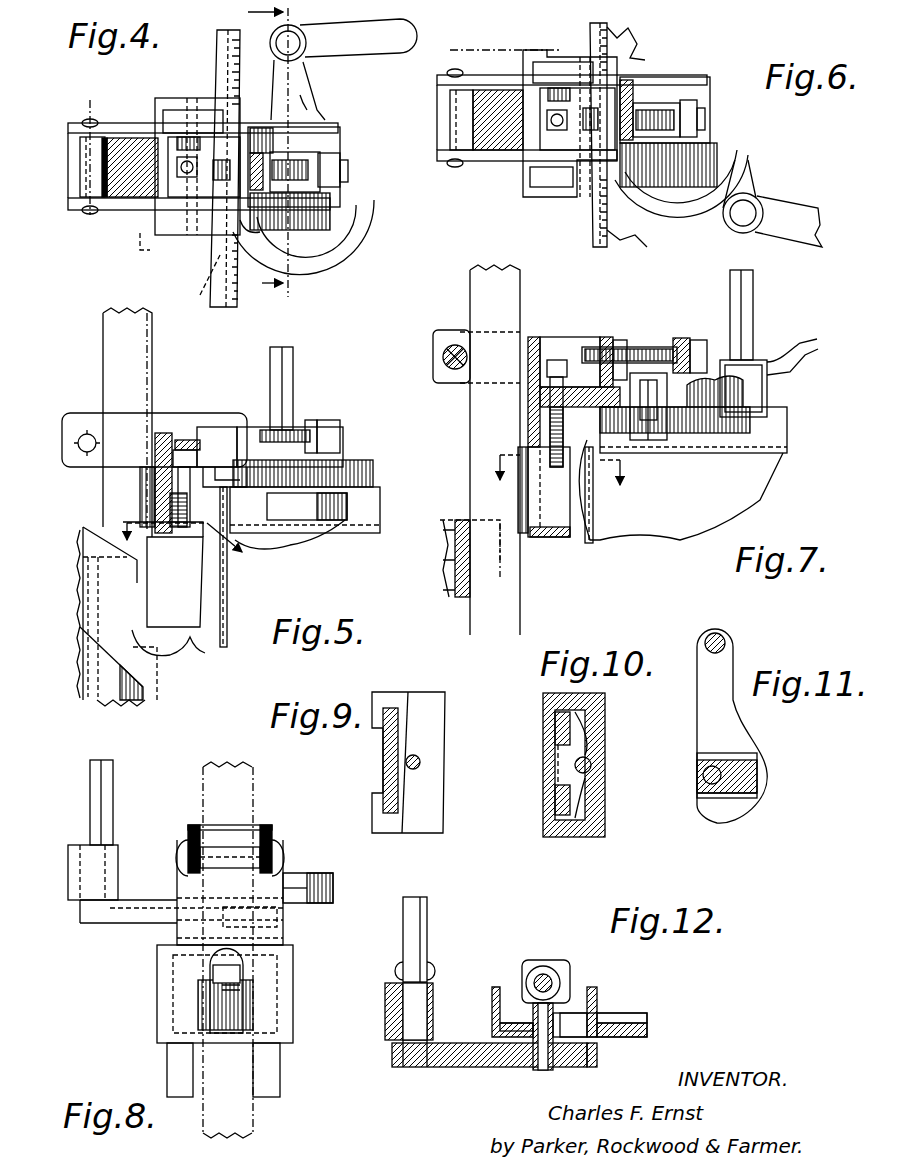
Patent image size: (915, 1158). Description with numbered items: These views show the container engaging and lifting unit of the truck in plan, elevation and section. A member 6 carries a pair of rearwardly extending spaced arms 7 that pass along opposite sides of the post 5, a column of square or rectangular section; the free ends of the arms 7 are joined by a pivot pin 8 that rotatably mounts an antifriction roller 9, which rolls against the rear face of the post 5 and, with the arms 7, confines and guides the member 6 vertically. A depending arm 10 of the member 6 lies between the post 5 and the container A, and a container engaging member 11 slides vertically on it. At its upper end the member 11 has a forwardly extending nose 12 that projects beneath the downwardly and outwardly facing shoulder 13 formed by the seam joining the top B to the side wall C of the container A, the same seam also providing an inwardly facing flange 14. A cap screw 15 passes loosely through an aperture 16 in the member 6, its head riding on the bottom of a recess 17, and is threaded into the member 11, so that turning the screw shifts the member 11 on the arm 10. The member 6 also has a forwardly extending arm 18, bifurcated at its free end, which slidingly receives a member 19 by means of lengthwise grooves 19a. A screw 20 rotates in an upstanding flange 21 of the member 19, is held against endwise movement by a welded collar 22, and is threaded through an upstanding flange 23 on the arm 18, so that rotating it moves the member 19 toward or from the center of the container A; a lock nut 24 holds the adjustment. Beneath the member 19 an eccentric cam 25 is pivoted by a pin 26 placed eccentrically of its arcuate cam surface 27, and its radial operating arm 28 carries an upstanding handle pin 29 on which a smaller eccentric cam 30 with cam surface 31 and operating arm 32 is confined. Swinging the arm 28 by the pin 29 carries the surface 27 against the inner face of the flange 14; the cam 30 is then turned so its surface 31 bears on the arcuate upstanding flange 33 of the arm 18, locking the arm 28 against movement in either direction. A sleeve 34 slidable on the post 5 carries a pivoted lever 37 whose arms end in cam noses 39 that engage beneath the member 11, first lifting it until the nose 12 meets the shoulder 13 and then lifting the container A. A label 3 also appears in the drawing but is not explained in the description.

In FIG. 6, the workpiece edge 3 is at (630, 130).
In FIG. 4, the post 5 is at (107, 172).
In FIG. 6, the post 5 is at (473, 105).
In FIG. 5, the post 5 is at (127, 422).
In FIG. 7, the post 5 is at (490, 450).
In FIG. 8, the post 5 is at (203, 789).
In FIG. 4, the member 6 is at (250, 118).
In FIG. 6, the member 6 is at (530, 180).
In FIG. 5, the member 6 is at (160, 412).
In FIG. 7, the member 6 is at (535, 336).
In FIG. 8, the member 6 is at (283, 862).
In FIG. 12, the member 6 is at (495, 1002).
In FIG. 4, the rearwardly extending spaced arms 7 is at (120, 128).
In FIG. 6, the rearwardly extending spaced arms 7 is at (478, 75).
In FIG. 5, the rearwardly extending spaced arms 7 is at (154, 440).
In FIG. 7, the rearwardly extending spaced arms 7 is at (448, 333).
In FIG. 8, the rearwardly extending spaced arms 7 is at (188, 830).
In FIG. 4, the pivot pin 8 is at (90, 123).
In FIG. 6, the pivot pin 8 is at (462, 160).
In FIG. 5, the pivot pin 8 is at (85, 434).
In FIG. 7, the pivot pin 8 is at (443, 360).
In FIG. 8, the pivot pin 8 is at (178, 855).
In FIG. 4, the antifriction roller 9 is at (85, 165).
In FIG. 6, the antifriction roller 9 is at (455, 128).
In FIG. 5, the antifriction roller 9 is at (189, 545).
In FIG. 7, the antifriction roller 9 is at (445, 354).
In FIG. 8, the antifriction roller 9 is at (240, 845).
In FIG. 5, the depending arm 10 is at (158, 513).
In FIG. 7, the depending arm 10 is at (535, 416).
In FIG. 8, the depending arm 10 is at (277, 937).
In FIG. 9, the depending arm 10 is at (385, 774).
In FIG. 10, the depending arm 10 is at (557, 752).
In FIG. 4, the container engaging member 11 is at (195, 240).
In FIG. 6, the container engaging member 11 is at (545, 197).
In FIG. 5, the container engaging member 11 is at (245, 503).
In FIG. 7, the container engaging member 11 is at (560, 522).
In FIG. 8, the container engaging member 11 is at (291, 980).
In FIG. 9, the container engaging member 11 is at (402, 692).
In FIG. 10, the container engaging member 11 is at (607, 722).
In FIG. 4, the nose 12 is at (237, 155).
In FIG. 6, the nose 12 is at (585, 200).
In FIG. 5, the nose 12 is at (227, 600).
In FIG. 7, the nose 12 is at (590, 480).
In FIG. 9, the nose 12 is at (445, 758).
In FIG. 5, the shoulder 13 is at (210, 528).
In FIG. 7, the shoulder 13 is at (577, 386).
In FIG. 4, the flange 14 is at (222, 58).
In FIG. 6, the flange 14 is at (608, 235).
In FIG. 5, the flange 14 is at (370, 500).
In FIG. 7, the flange 14 is at (787, 413).
In FIG. 4, the cap screw 15 is at (190, 178).
In FIG. 6, the cap screw 15 is at (563, 108).
In FIG. 5, the cap screw 15 is at (187, 440).
In FIG. 7, the cap screw 15 is at (549, 426).
In FIG. 8, the cap screw 15 is at (215, 1002).
In FIG. 9, the cap screw 15 is at (420, 758).
In FIG. 10, the cap screw 15 is at (593, 766).
In FIG. 5, the aperture 16 is at (160, 479).
In FIG. 7, the aperture 16 is at (545, 395).
In FIG. 4, the recess 17 is at (195, 176).
In FIG. 6, the recess 17 is at (570, 131).
In FIG. 5, the recess 17 is at (180, 448).
In FIG. 7, the recess 17 is at (560, 399).
In FIG. 4, the forwardly extending arm 18 is at (345, 131).
In FIG. 6, the forwardly extending arm 18 is at (682, 100).
In FIG. 5, the forwardly extending arm 18 is at (335, 445).
In FIG. 12, the forwardly extending arm 18 is at (600, 995).
In FIG. 4, the mounting member 19 is at (292, 232).
In FIG. 6, the mounting member 19 is at (700, 100).
In FIG. 5, the mounting member 19 is at (350, 462).
In FIG. 7, the mounting member 19 is at (720, 434).
In FIG. 11, the mounting member 19 is at (737, 792).
In FIG. 12, the mounting member 19 is at (590, 989).
In FIG. 12, the grooves 19a is at (615, 1016).
In FIG. 4, the screw 20 is at (288, 165).
In FIG. 6, the screw 20 is at (705, 126).
In FIG. 5, the screw 20 is at (262, 430).
In FIG. 7, the screw 20 is at (640, 349).
In FIG. 12, the screw 20 is at (536, 980).
In FIG. 4, the upstanding flange 21 is at (348, 178).
In FIG. 6, the upstanding flange 21 is at (697, 102).
In FIG. 5, the upstanding flange 21 is at (322, 423).
In FIG. 7, the upstanding flange 21 is at (698, 340).
In FIG. 12, the upstanding flange 21 is at (530, 960).
In FIG. 4, the collar 22 is at (345, 166).
In FIG. 6, the collar 22 is at (700, 112).
In FIG. 5, the collar 22 is at (310, 420).
In FIG. 7, the collar 22 is at (681, 337).
In FIG. 12, the collar 22 is at (552, 962).
In FIG. 4, the upstanding flange 23 is at (268, 226).
In FIG. 6, the upstanding flange 23 is at (610, 90).
In FIG. 7, the upstanding flange 23 is at (607, 336).
In FIG. 6, the lock nut 24 is at (618, 105).
In FIG. 5, the lock nut 24 is at (250, 433).
In FIG. 7, the lock nut 24 is at (620, 340).
In FIG. 4, the eccentric cam 25 is at (307, 112).
In FIG. 6, the eccentric cam 25 is at (632, 170).
In FIG. 5, the eccentric cam 25 is at (320, 505).
In FIG. 7, the eccentric cam 25 is at (650, 437).
In FIG. 8, the eccentric cam 25 is at (283, 920).
In FIG. 11, the eccentric cam 25 is at (762, 766).
In FIG. 12, the eccentric cam 25 is at (505, 1068).
In FIG. 7, the pivot pin 26 is at (652, 428).
In FIG. 11, the pivot pin 26 is at (705, 780).
In FIG. 12, the pivot pin 26 is at (545, 1068).
In FIG. 5, the arcuate cam surface 27 is at (318, 500).
In FIG. 11, the arcuate cam surface 27 is at (758, 806).
In FIG. 12, the arcuate cam surface 27 is at (600, 1057).
In FIG. 4, the operating arm 28 is at (305, 73).
In FIG. 6, the operating arm 28 is at (728, 222).
In FIG. 7, the operating arm 28 is at (712, 426).
In FIG. 8, the operating arm 28 is at (138, 917).
In FIG. 11, the operating arm 28 is at (740, 674).
In FIG. 12, the operating arm 28 is at (455, 1068).
In FIG. 4, the handle pin 29 is at (300, 30).
In FIG. 6, the handle pin 29 is at (760, 205).
In FIG. 5, the handle pin 29 is at (290, 350).
In FIG. 7, the handle pin 29 is at (753, 284).
In FIG. 8, the handle pin 29 is at (92, 770).
In FIG. 11, the handle pin 29 is at (705, 643).
In FIG. 12, the handle pin 29 is at (430, 906).
In FIG. 4, the eccentric cam 30 is at (272, 50).
In FIG. 6, the eccentric cam 30 is at (760, 195).
In FIG. 7, the eccentric cam 30 is at (768, 381).
In FIG. 8, the eccentric cam 30 is at (75, 850).
In FIG. 12, the eccentric cam 30 is at (388, 1014).
In FIG. 6, the cam surface 31 is at (752, 205).
In FIG. 4, the operating arm 32 is at (358, 38).
In FIG. 6, the operating arm 32 is at (788, 221).
In FIG. 7, the operating arm 32 is at (799, 340).
In FIG. 12, the operating arm 32 is at (435, 968).
In FIG. 4, the arcuate upstanding flange 33 is at (355, 243).
In FIG. 6, the arcuate upstanding flange 33 is at (745, 175).
In FIG. 5, the arcuate upstanding flange 33 is at (365, 476).
In FIG. 7, the arcuate upstanding flange 33 is at (700, 382).
In FIG. 8, the arcuate upstanding flange 33 is at (335, 891).
In FIG. 12, the arcuate upstanding flange 33 is at (650, 1028).
In FIG. 5, the sleeve 34 is at (100, 652).
In FIG. 7, the sleeve 34 is at (455, 576).
In FIG. 5, the lever 37 is at (98, 586).
In FIG. 7, the lever 37 is at (453, 541).
In FIG. 4, the cam noses 39 is at (150, 236).
In FIG. 5, the cam noses 39 is at (205, 653).
In FIG. 7, the cam noses 39 is at (553, 541).
In FIG. 8, the cam noses 39 is at (165, 1051).
In FIG. 5, the container A is at (258, 615).
In FIG. 7, the container A is at (693, 490).
In FIG. 4, the top B is at (290, 280).
In FIG. 5, the top B is at (275, 550).
In FIG. 7, the top B is at (765, 450).
In FIG. 5, the side wall C is at (225, 621).
In FIG. 7, the side wall C is at (595, 528).